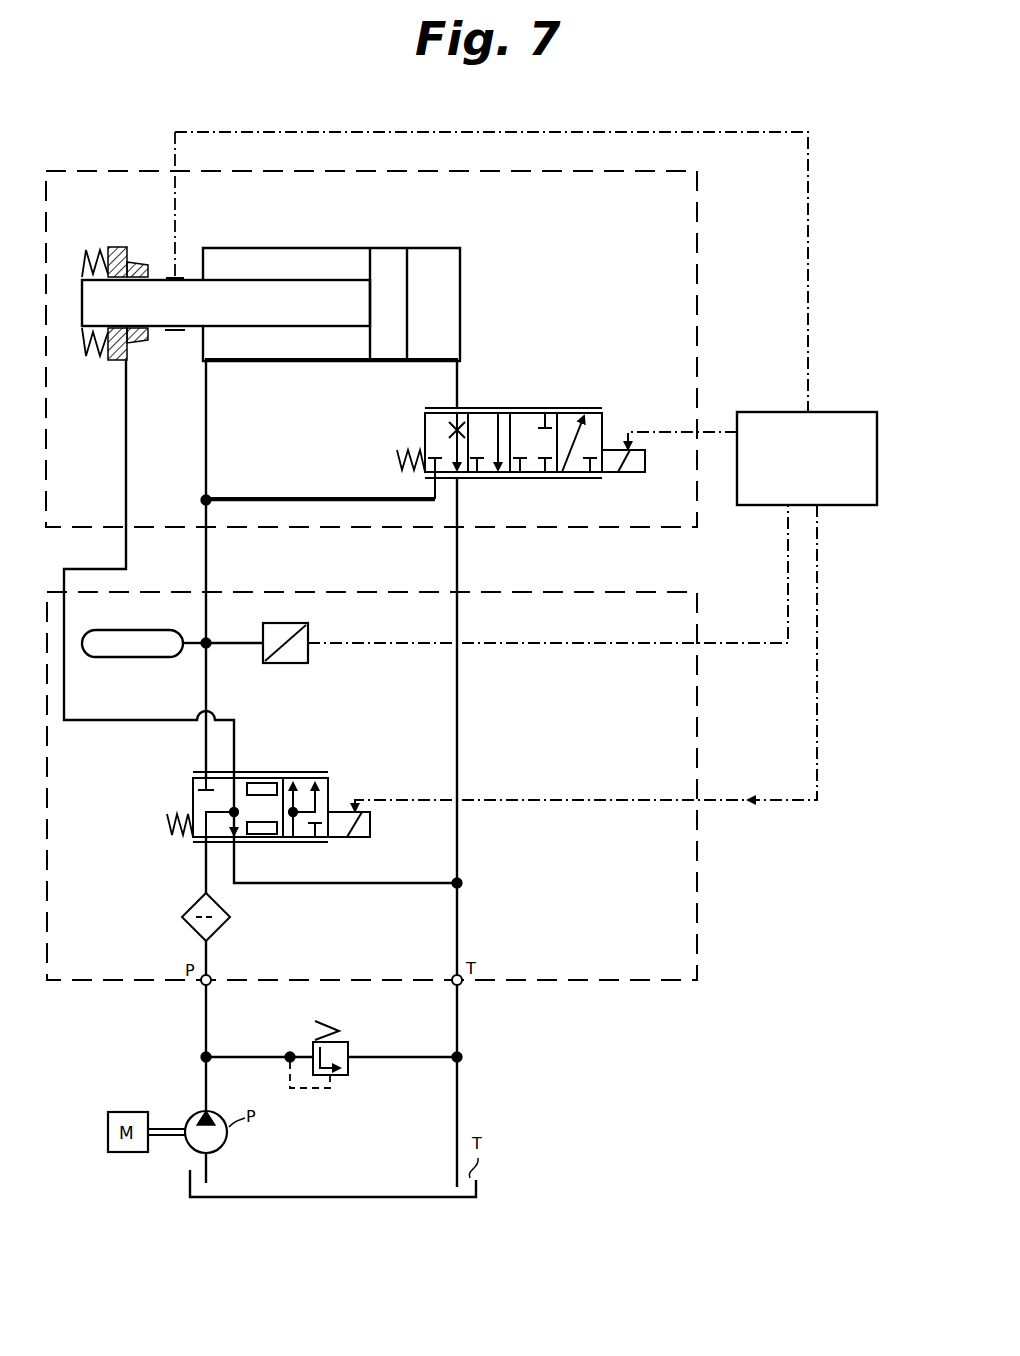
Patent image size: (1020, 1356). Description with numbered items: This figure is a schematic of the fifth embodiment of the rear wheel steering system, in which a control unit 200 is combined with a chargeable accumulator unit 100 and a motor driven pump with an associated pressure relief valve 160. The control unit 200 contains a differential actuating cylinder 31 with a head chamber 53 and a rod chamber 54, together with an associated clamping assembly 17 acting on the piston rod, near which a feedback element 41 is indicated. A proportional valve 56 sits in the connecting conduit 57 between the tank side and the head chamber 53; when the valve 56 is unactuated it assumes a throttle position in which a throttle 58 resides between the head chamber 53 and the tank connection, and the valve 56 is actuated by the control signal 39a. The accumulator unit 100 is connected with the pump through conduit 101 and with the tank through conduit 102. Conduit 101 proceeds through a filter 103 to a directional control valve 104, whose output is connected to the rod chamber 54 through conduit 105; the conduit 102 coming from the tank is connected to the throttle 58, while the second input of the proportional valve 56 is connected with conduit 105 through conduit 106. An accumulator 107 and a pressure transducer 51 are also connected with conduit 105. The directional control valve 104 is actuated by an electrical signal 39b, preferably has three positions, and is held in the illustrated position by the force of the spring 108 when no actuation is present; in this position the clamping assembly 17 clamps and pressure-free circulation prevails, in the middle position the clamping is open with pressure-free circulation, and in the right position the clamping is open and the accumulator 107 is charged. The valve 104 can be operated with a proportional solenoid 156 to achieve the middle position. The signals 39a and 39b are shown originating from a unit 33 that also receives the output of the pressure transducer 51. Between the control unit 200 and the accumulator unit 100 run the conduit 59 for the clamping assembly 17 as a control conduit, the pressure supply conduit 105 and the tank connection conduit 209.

The clamping assembly 17 is at (100, 370).
The differential actuating cylinder 31 is at (356, 301).
The control unit 33 is at (847, 506).
The control signal 39a is at (653, 430).
The electrical signal 39b is at (733, 797).
The position sensor 41 is at (180, 274).
The pressure transducer 51 is at (308, 627).
The head chamber 53 is at (456, 298).
The rod chamber 54 is at (325, 362).
The proportional valve 56 is at (425, 432).
The connecting conduit 57 is at (458, 380).
The throttle 58 is at (440, 430).
The conduit 59 is at (127, 440).
The chargeable accumulator unit 100 is at (698, 940).
The conduit 101 is at (205, 1031).
The conduit 102 is at (458, 1030).
The filter 103 is at (227, 927).
The directional control valve 104 is at (292, 814).
The conduit 105 is at (207, 557).
The conduit 106 is at (294, 498).
The accumulator 107 is at (137, 658).
The spring 108 is at (170, 814).
The proportional solenoid 156 is at (370, 836).
The pressure relief valve 160 is at (350, 1040).
The control element or unit 200 is at (699, 221).
The tank connection conduit 209 is at (458, 556).